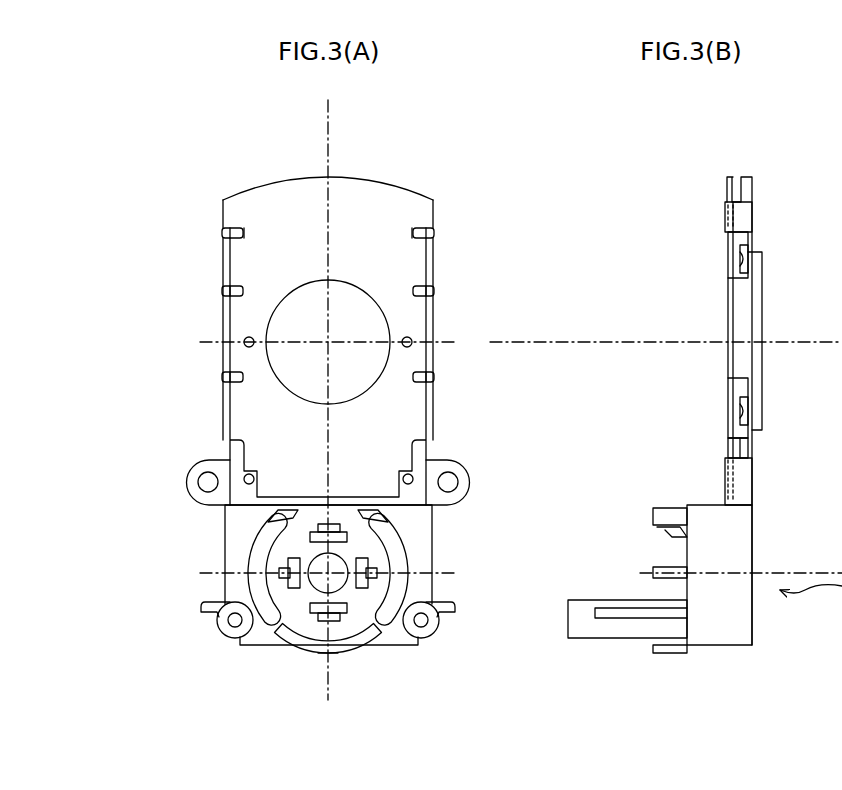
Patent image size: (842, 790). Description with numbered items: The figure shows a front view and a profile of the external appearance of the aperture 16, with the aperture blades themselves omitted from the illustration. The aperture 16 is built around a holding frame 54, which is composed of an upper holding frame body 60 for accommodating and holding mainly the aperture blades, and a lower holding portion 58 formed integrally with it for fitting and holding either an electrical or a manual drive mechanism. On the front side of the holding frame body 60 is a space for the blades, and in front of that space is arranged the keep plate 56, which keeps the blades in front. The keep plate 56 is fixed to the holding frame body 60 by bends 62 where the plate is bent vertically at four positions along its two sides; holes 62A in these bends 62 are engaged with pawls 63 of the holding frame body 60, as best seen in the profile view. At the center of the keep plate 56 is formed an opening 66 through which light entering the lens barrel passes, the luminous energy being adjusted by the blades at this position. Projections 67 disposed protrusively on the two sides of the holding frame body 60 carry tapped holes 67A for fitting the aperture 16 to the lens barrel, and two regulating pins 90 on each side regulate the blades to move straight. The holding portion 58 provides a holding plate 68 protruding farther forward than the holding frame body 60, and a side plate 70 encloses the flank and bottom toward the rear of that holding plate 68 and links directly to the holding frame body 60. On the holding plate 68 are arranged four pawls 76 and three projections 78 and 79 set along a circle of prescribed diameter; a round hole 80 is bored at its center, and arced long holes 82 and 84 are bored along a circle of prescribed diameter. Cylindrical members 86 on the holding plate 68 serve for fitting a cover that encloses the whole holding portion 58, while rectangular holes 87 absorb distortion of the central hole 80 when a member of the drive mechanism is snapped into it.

In FIG. 3A, the aperture 16 is at (633, 185).
In FIG. 3B, the holding frame 54 is at (752, 200).
In FIG. 3A, the keep plate 56 is at (358, 226).
In FIG. 3B, the keep plate 56 is at (728, 250).
In FIG. 3A, the holding portion 58 is at (160, 560).
In FIG. 3A, the holding frame body 60 is at (690, 405).
In FIG. 3A, the bend 62 is at (230, 270).
In FIG. 3B, the bend 62 is at (735, 272).
In FIG. 3B, the hole 62A is at (745, 262).
In FIG. 3B, the pawl 63 is at (755, 305).
In FIG. 3A, the opening 66 is at (368, 308).
In FIG. 3A, the projection 67 is at (193, 489).
In FIG. 3B, the projection 67 is at (742, 490).
In FIG. 3A, the tapped hole 67A is at (208, 480).
In FIG. 3A, the holding plate 68 is at (380, 640).
In FIG. 3B, the holding plate 68 is at (690, 547).
In FIG. 3B, the side plate 70 is at (728, 608).
In FIG. 3A, the pawl 76 is at (350, 527).
In FIG. 3B, the pawl 76 is at (685, 540).
In FIG. 3A, the projection 78 is at (330, 655).
In FIG. 3B, the projection 78 is at (675, 653).
In FIG. 3A, the projection 79 is at (266, 541).
In FIG. 3B, the projection 79 is at (665, 512).
In FIG. 3A, the round hole 80 is at (340, 590).
In FIG. 3A, the arced long hole 82 is at (370, 575).
In FIG. 3A, the arced long hole 84 is at (290, 573).
In FIG. 3A, the cylindrical member 86 is at (235, 622).
In FIG. 3B, the cylindrical member 86 is at (600, 640).
In FIG. 3A, the rectangular hole 87 is at (345, 537).
In FIG. 3A, the regulating pin 90 is at (244, 342).